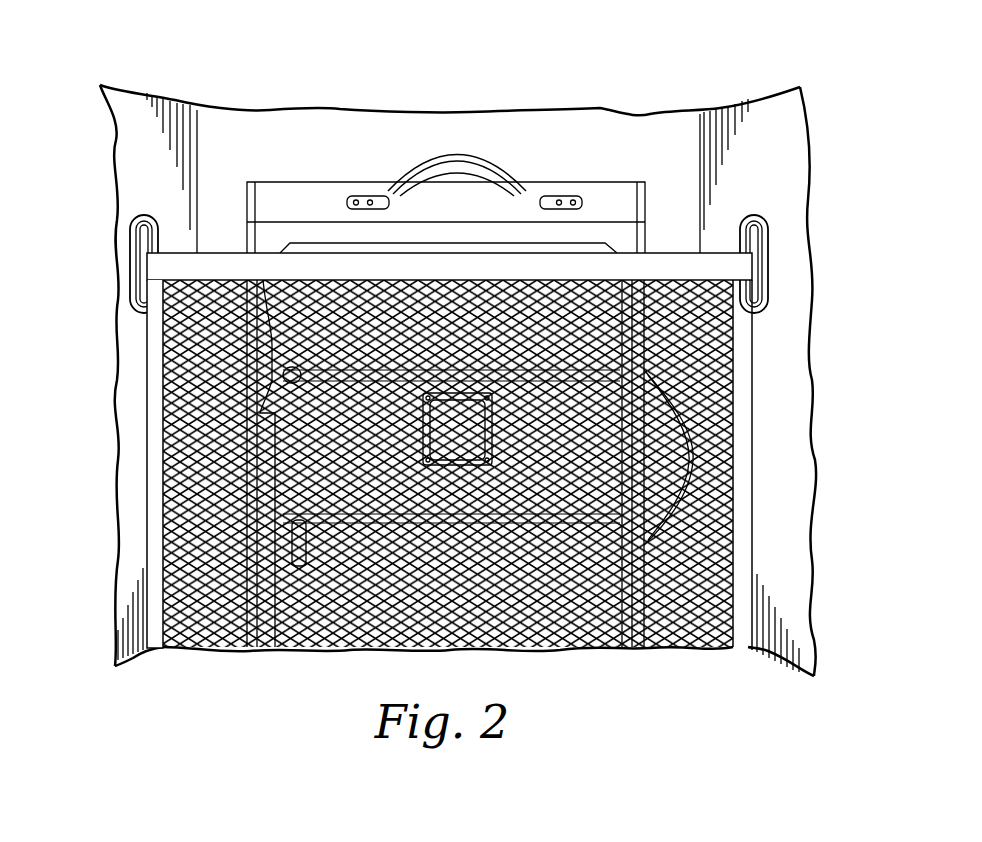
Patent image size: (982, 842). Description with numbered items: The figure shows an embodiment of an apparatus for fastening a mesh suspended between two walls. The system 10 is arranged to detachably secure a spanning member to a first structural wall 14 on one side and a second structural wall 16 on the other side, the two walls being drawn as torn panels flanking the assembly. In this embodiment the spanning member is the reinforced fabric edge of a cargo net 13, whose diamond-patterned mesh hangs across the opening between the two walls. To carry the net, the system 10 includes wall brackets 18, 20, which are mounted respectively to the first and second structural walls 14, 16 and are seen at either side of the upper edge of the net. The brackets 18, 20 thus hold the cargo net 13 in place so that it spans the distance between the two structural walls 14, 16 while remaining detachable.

The system 10 is at (641, 118).
The cargo net 13 is at (210, 617).
The first structural wall 14 is at (108, 153).
The second structural wall 16 is at (791, 170).
The wall bracket 18 is at (143, 327).
The wall bracket 20 is at (764, 312).